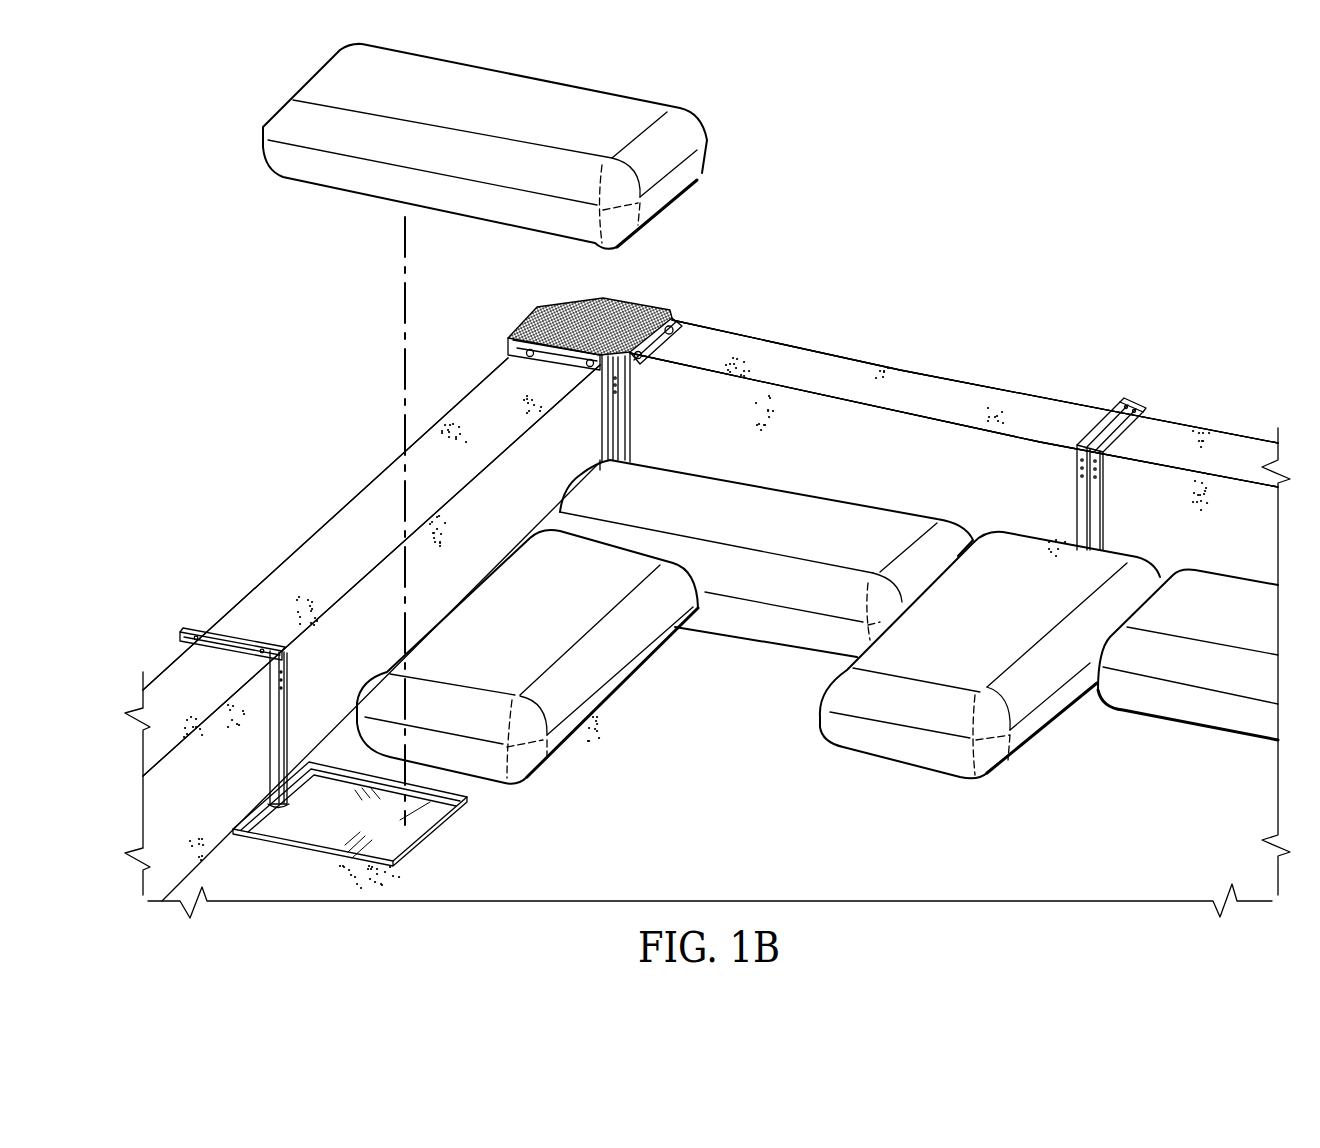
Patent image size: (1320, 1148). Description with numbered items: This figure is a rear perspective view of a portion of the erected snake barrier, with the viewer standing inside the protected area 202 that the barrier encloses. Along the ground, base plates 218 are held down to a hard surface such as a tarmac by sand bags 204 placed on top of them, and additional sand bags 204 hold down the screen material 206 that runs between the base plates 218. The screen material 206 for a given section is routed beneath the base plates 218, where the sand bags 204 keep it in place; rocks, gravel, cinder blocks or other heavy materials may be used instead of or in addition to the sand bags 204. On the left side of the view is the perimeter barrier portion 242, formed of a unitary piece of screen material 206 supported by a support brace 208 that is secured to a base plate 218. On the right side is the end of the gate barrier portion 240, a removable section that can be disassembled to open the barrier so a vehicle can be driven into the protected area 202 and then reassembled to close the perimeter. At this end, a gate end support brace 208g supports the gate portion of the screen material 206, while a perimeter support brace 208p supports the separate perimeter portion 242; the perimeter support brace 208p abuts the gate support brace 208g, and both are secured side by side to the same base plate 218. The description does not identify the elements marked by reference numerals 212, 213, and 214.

The protected area 202 is at (760, 835).
The sand bags 204 is at (562, 738).
The screen material 206 is at (1062, 530).
The support brace 208 is at (262, 634).
The perimeter support brace 208p is at (1122, 403).
The gate end support brace 208g is at (1140, 408).
The wall structure 212 is at (913, 227).
The back cushion 213 is at (766, 476).
The wall top surface 214 is at (1026, 403).
The base plate 218 is at (430, 815).
The gate barrier portion 240 is at (1250, 425).
The perimeter barrier portion 242 is at (918, 358).